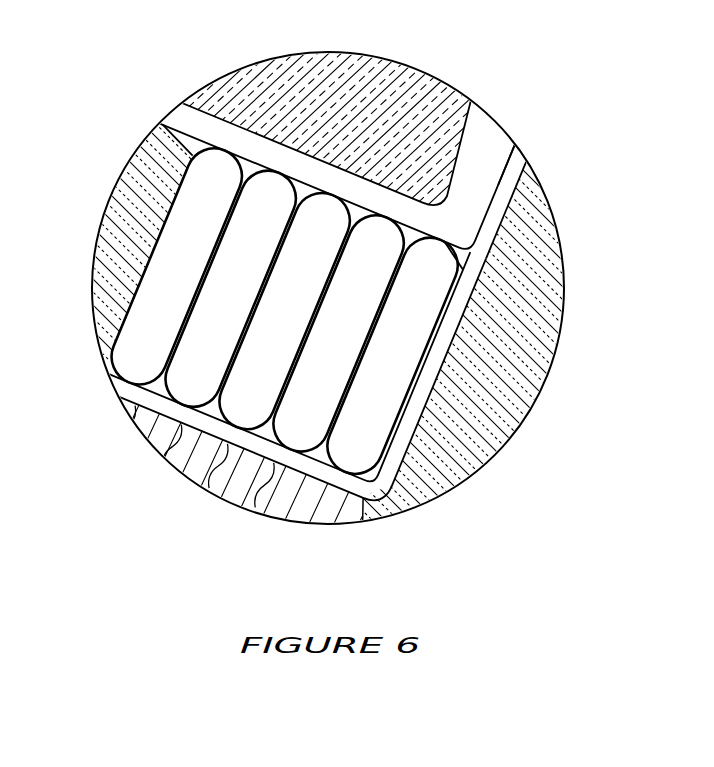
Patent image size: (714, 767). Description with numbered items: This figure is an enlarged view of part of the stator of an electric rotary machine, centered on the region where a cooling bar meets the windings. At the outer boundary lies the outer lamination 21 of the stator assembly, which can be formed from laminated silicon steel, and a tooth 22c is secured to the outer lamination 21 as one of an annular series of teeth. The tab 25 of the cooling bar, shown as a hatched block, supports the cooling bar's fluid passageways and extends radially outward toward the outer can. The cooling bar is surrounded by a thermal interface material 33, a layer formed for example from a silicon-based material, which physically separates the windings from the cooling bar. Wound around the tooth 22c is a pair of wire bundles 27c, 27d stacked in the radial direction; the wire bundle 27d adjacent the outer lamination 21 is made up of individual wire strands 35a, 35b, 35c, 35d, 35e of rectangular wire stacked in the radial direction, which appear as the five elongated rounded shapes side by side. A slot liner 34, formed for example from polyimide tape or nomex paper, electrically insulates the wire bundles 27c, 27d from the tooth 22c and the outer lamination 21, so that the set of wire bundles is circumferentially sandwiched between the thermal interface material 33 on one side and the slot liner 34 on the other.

The outer lamination 21 is at (561, 290).
The tab 25 is at (331, 72).
The thermal interface material 33 is at (488, 128).
The slot liner 34 is at (511, 159).
The wire bundle 27c is at (106, 294).
The wire bundle 27d is at (420, 367).
The tooth 22c is at (323, 506).
The wire strand 35a is at (132, 358).
The wire strand 35b is at (195, 387).
The wire strand 35c is at (247, 411).
The wire strand 35d is at (300, 432).
The wire strand 35e is at (355, 455).